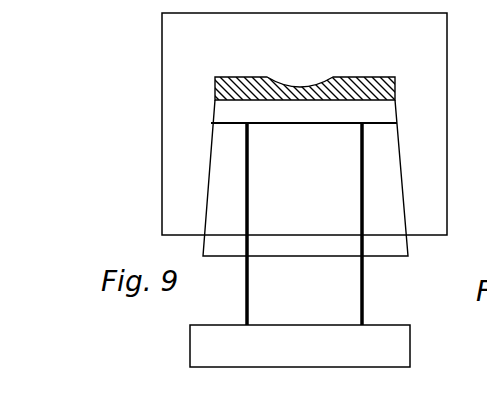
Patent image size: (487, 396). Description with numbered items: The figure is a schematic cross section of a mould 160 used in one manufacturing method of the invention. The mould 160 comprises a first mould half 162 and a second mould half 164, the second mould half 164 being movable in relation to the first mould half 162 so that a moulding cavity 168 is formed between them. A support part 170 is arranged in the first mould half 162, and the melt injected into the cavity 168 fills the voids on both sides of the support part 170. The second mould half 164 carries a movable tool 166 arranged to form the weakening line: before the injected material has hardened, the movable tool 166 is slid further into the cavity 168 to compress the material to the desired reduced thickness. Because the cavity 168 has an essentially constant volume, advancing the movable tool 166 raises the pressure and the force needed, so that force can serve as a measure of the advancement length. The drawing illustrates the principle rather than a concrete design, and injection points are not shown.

The mould 160 is at (104, 80).
The first mould half 162 is at (313, 42).
The second mould half 164 is at (328, 184).
The movable tool 166 is at (364, 293).
The moulding cavity 168 is at (365, 115).
The support part 170 is at (393, 91).